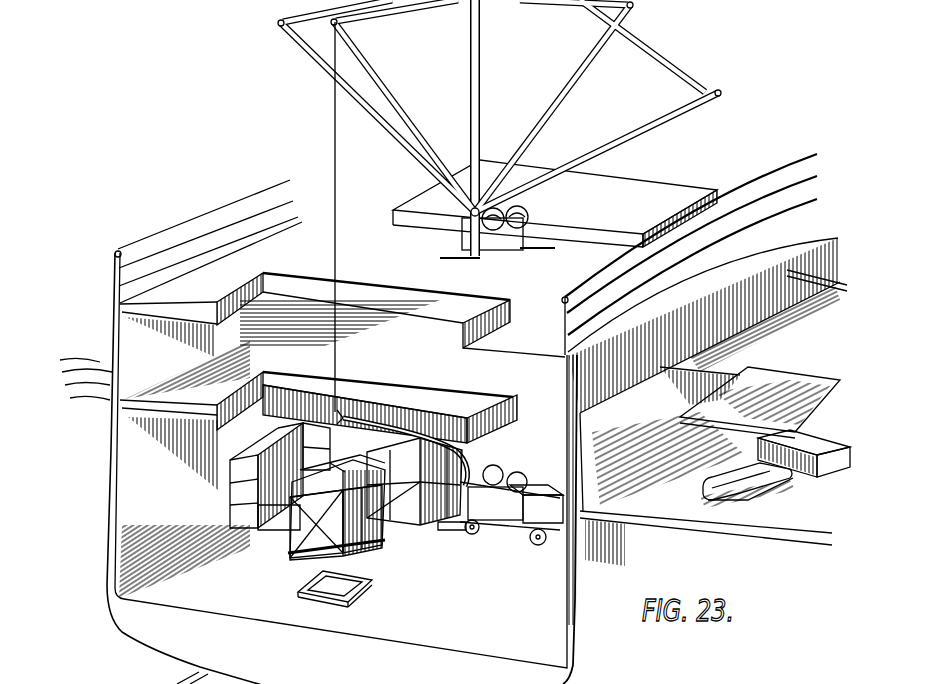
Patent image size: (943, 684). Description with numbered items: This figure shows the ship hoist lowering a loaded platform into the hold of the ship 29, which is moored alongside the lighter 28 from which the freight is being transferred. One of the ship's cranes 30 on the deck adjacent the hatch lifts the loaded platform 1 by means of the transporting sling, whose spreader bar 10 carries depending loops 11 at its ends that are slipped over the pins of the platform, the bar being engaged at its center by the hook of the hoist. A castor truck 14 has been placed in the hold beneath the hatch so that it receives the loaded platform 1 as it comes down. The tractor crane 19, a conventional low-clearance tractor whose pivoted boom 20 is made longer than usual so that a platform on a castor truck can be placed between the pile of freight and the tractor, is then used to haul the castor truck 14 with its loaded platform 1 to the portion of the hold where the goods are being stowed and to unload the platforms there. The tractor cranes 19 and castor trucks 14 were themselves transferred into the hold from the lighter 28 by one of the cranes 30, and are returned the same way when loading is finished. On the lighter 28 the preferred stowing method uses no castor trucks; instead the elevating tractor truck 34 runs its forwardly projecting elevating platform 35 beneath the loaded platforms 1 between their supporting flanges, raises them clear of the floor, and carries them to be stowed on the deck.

The loaded platform 1 is at (303, 563).
The spreader bar 10 is at (229, 497).
The depending loops 11 is at (290, 538).
The castor truck 14 is at (318, 596).
The tractor crane 19 is at (511, 505).
The pivoted boom 20 is at (348, 420).
The lighter 28 is at (760, 313).
The ship 29 is at (116, 352).
The cranes 30 is at (314, 68).
The elevating tractor truck 34 is at (758, 449).
The elevating platform 35 is at (703, 490).